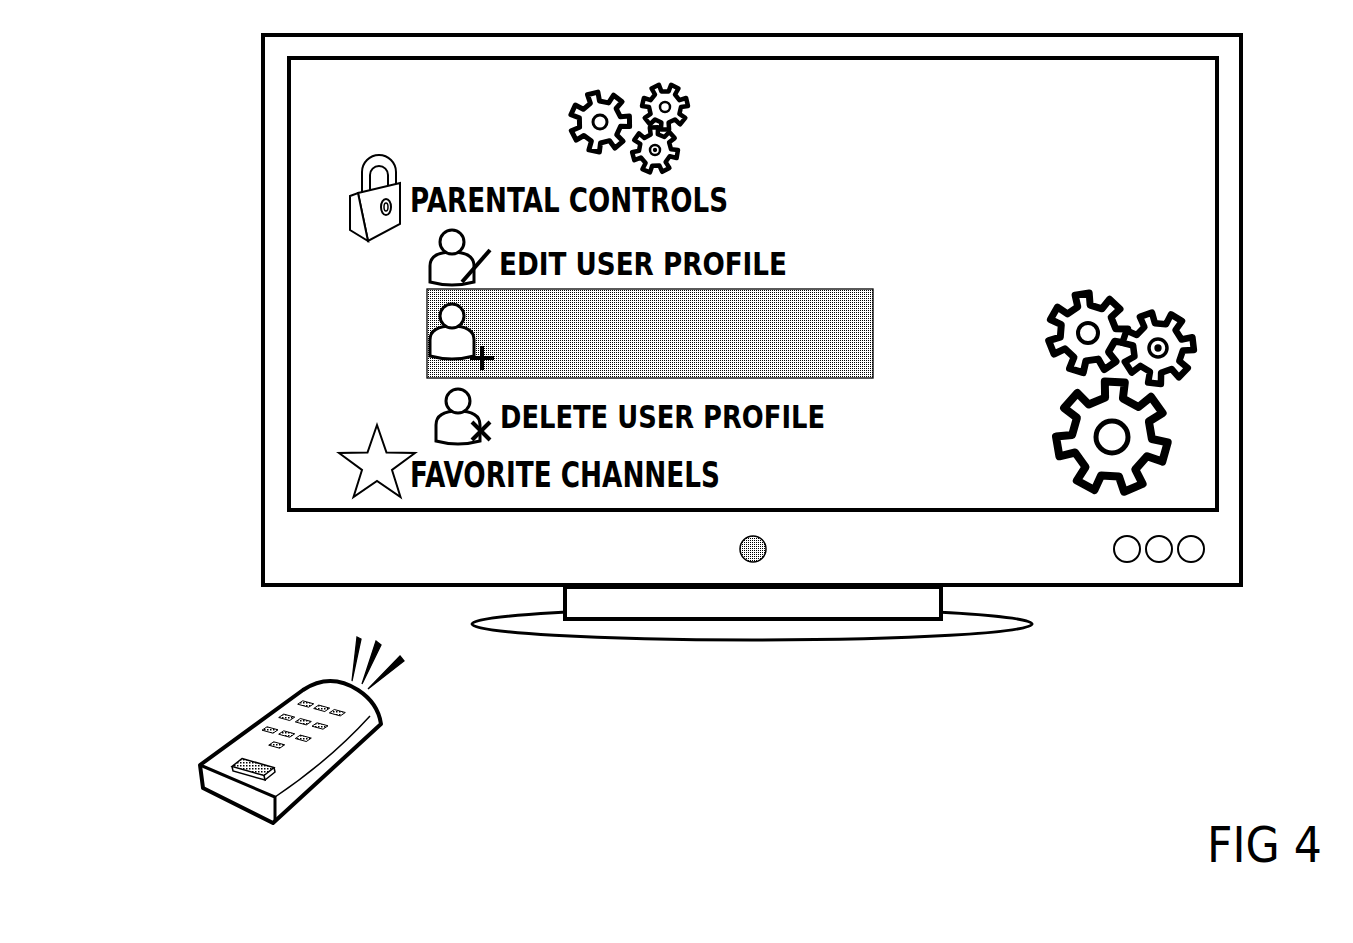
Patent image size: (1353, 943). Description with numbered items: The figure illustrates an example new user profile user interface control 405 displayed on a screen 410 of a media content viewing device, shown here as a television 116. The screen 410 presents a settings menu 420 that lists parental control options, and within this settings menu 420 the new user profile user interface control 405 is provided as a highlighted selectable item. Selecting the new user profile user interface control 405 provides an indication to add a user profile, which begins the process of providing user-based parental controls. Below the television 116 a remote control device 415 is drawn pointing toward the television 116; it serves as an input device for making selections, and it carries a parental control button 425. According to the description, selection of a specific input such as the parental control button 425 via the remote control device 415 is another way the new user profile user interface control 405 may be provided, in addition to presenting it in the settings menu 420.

The television 116 is at (1243, 58).
The screen 410 is at (1178, 117).
The settings menu 420 is at (350, 124).
The new user profile user interface control 405 is at (875, 314).
The remote control device 415 is at (305, 730).
The parental control button 425 is at (273, 744).